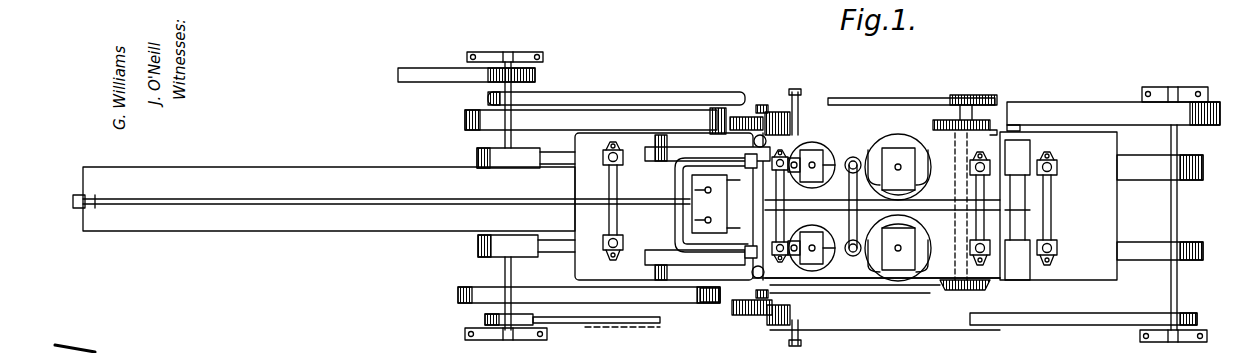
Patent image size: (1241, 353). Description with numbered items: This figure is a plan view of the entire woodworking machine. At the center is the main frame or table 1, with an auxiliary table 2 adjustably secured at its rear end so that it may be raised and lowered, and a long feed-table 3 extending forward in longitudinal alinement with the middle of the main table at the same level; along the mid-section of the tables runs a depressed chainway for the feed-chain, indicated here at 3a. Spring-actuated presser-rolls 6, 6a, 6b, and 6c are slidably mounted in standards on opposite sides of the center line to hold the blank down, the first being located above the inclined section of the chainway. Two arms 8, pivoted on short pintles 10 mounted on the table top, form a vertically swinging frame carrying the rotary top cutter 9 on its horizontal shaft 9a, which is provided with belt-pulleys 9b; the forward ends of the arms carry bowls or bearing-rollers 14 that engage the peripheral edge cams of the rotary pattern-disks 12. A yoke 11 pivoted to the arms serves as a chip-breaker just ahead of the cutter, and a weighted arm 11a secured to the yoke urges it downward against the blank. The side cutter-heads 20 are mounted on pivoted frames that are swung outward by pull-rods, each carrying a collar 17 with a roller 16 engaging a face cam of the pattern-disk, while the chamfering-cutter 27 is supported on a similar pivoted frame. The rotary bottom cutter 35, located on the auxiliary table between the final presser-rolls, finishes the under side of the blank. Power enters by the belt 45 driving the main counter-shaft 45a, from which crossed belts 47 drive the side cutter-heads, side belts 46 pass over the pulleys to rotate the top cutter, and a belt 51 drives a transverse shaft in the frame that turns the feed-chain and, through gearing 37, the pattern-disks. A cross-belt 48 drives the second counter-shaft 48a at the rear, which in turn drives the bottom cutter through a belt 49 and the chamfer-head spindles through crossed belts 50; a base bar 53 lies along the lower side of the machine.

The main frame or table 1 is at (669, 206).
The auxiliary table 2 is at (1058, 206).
The feed-table 3 is at (329, 199).
The rod in beam 3a is at (348, 206).
The presser-roll 6 is at (606, 186).
The presser-roll 6a is at (790, 206).
The presser-roll 6b is at (974, 190).
The presser-roll 6c is at (1054, 190).
The arms 8 is at (672, 152).
The rotary top cutter 9 is at (720, 200).
The horizontal shaft 9a is at (718, 230).
The belt-pulleys 9b is at (718, 110).
The pintles 10 is at (656, 140).
The yoke 11 is at (683, 194).
The weighted arm 11a is at (622, 337).
The rotary pattern-disk 12 is at (768, 112).
The bowls or bearing-rollers 14 is at (750, 118).
The bowl or roller 16 is at (770, 110).
The collar 17 is at (798, 104).
The side cutter-head 20 is at (822, 158).
The chamfering-cutter 27 is at (904, 160).
The rotary cutter 35 is at (1030, 210).
The gear 37 is at (933, 125).
The belt 45 is at (440, 82).
The main counter-shaft 45a is at (505, 274).
The side belts 46 is at (591, 118).
The crossed belts 47 is at (477, 153).
The cross-belt 48 is at (485, 320).
The second counter-shaft 48a is at (1180, 257).
The belt 49 is at (1080, 103).
The crossed belts 50 is at (1143, 170).
The belt 51 is at (905, 98).
The base bar 53 is at (885, 341).